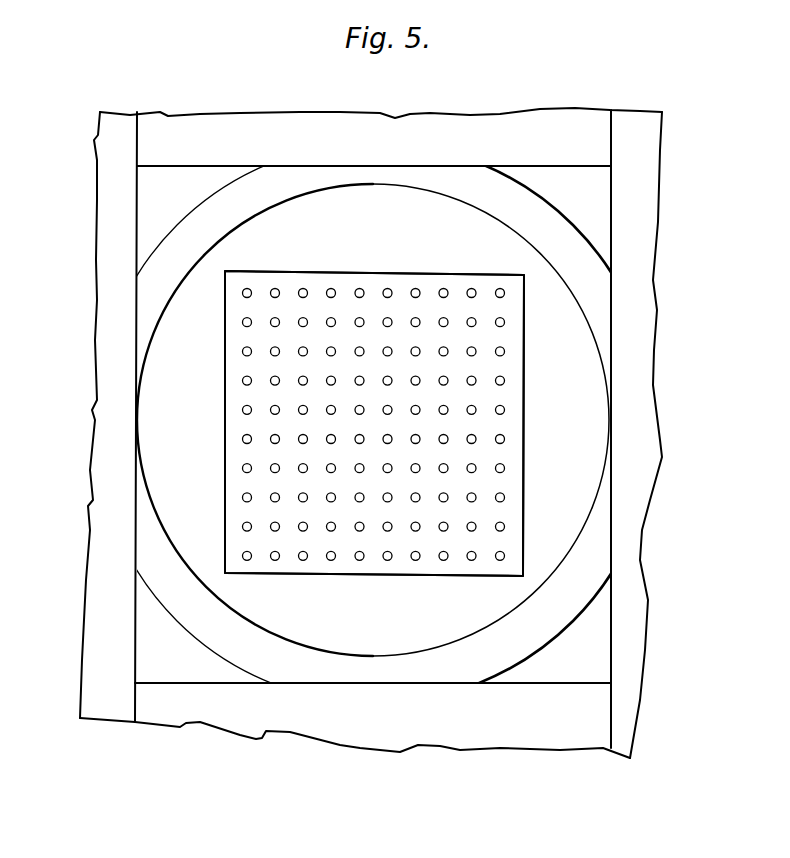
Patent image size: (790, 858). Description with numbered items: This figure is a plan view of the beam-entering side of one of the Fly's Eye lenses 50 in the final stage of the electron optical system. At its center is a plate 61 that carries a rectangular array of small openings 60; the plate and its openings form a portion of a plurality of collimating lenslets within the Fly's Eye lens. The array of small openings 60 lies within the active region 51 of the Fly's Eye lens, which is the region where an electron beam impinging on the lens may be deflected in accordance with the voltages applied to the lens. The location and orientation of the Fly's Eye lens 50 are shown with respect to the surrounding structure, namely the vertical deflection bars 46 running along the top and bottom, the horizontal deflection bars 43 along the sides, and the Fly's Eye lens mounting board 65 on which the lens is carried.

The horizontal deflection bars 43 is at (108, 408).
The vertical deflection bars 46 is at (397, 140).
The Fly's Eye lens 50 is at (573, 232).
The active region 51 is at (523, 390).
The small openings 60 is at (275, 380).
The plate 61 is at (343, 272).
The Fly's Eye lens mounting board 65 is at (583, 647).